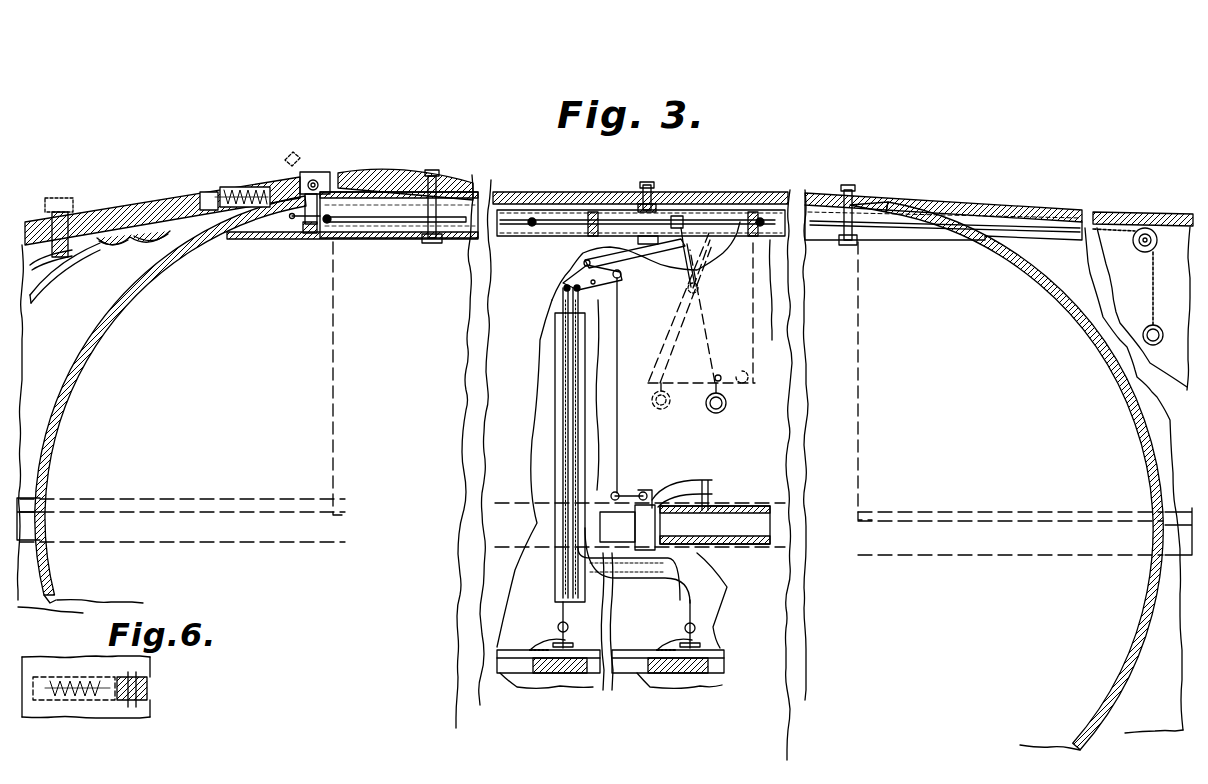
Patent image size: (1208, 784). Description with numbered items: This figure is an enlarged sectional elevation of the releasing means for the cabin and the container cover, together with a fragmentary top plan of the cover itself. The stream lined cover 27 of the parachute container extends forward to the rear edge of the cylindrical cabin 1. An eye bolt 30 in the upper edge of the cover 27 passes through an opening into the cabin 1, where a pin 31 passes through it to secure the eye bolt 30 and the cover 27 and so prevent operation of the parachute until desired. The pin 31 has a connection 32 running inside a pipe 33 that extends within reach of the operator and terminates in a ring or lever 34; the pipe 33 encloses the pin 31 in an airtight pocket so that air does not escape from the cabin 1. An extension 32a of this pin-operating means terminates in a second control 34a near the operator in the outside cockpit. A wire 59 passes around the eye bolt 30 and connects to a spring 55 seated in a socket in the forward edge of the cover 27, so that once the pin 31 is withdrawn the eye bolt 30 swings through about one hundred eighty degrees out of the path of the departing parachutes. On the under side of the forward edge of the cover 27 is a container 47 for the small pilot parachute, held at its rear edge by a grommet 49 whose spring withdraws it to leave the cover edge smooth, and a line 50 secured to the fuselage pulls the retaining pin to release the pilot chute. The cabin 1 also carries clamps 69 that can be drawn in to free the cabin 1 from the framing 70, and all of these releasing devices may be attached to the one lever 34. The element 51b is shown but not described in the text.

In FIG. 3, the cabin 1 is at (1006, 476).
In FIG. 3, the stream lined cover 27 is at (165, 200).
In FIG. 6, the stream lined cover 27 is at (100, 708).
In FIG. 3, the eye bolt 30 is at (298, 175).
In FIG. 6, the eye bolt 30 is at (153, 688).
In FIG. 3, the pin 31 is at (297, 224).
In FIG. 3, the connection 32 is at (370, 224).
In FIG. 3, the extension 32a is at (1036, 224).
In FIG. 3, the pipe 33 is at (418, 241).
In FIG. 3, the ring or lever 34 is at (728, 408).
In FIG. 3, the second control 34a is at (1143, 338).
In FIG. 3, the container 47 is at (170, 245).
In FIG. 3, the grommet 49 is at (62, 243).
In FIG. 3, the line 50 is at (30, 245).
In FIG. 3, the channel 51b is at (87, 255).
In FIG. 3, the spring 55 is at (226, 190).
In FIG. 6, the spring 55 is at (60, 703).
In FIG. 3, the wire 59 is at (295, 175).
In FIG. 6, the wire 59 is at (127, 693).
In FIG. 3, the clamps 69 is at (571, 628).
In FIG. 3, the framing 70 is at (520, 675).